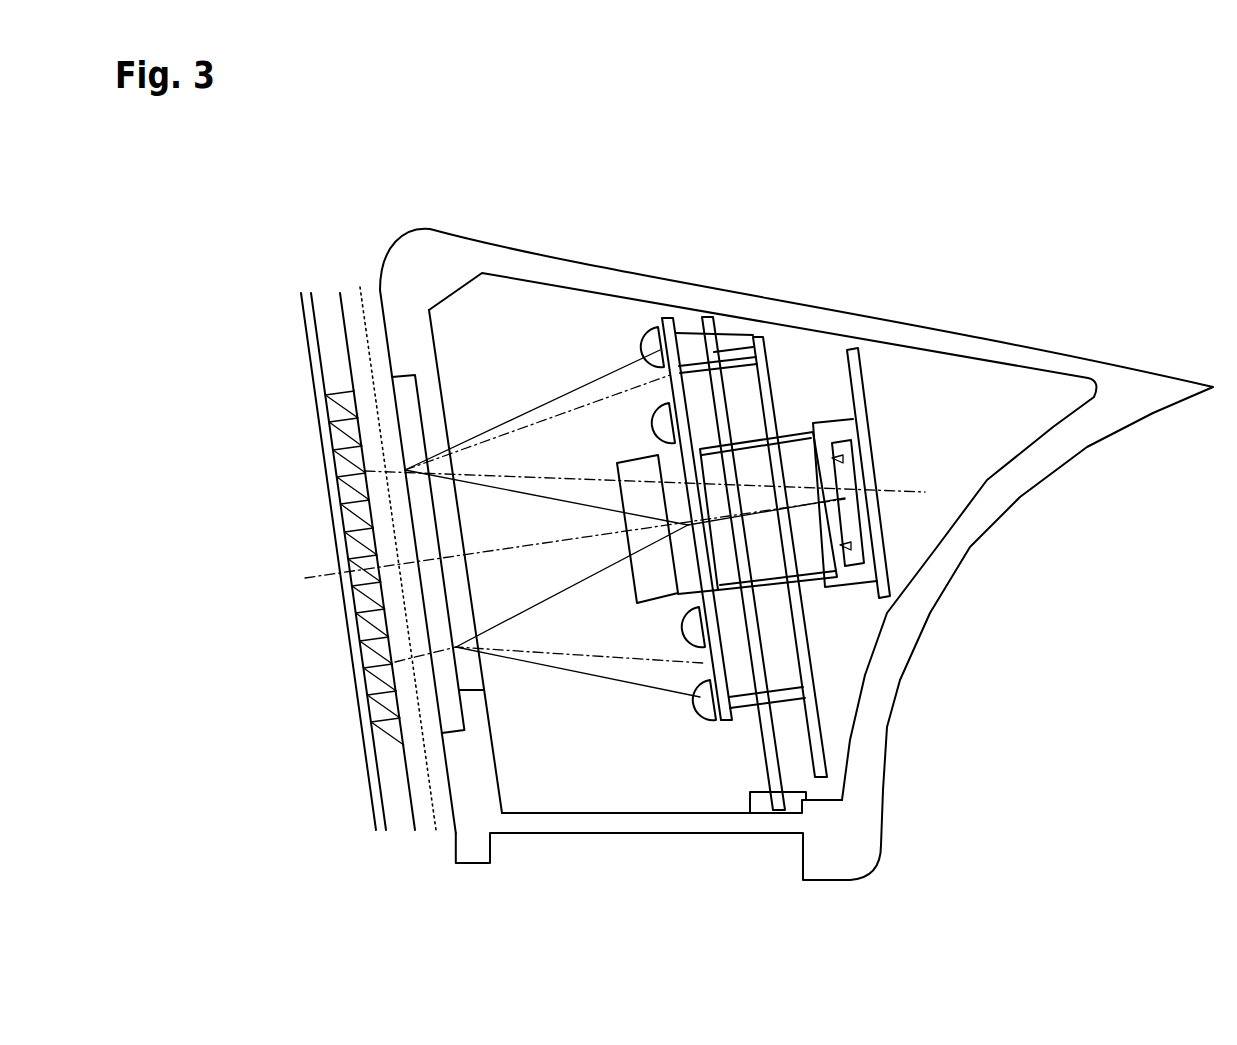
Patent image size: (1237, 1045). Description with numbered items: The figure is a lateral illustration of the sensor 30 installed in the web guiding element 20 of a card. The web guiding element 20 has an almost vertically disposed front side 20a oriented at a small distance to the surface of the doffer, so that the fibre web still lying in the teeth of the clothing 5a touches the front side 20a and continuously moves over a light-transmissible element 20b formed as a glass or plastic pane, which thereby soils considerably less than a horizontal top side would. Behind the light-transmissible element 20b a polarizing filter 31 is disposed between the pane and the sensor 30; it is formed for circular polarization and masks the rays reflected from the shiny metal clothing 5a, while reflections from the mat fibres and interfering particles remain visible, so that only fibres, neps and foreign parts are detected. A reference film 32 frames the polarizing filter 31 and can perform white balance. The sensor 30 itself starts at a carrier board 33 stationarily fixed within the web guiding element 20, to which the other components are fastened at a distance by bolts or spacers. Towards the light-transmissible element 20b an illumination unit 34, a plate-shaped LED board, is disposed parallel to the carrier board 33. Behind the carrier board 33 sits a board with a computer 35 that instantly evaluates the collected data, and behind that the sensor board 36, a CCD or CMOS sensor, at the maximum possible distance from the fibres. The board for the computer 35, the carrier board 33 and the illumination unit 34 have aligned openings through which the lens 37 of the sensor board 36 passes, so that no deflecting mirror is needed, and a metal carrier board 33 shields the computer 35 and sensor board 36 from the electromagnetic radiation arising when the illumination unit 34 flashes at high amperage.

The web guiding element 20 is at (286, 273).
The front side 20a is at (383, 350).
The light-transmissible element 20b is at (407, 427).
The clothing 5a is at (360, 518).
The sensor 30 is at (833, 294).
The polarizing filter 31 is at (435, 437).
The reference film 32 is at (487, 708).
The carrier board 33 is at (716, 340).
The illumination unit 34 is at (666, 333).
The computer 35 is at (762, 357).
The sensor board 36 is at (880, 547).
The lens 37 is at (653, 587).